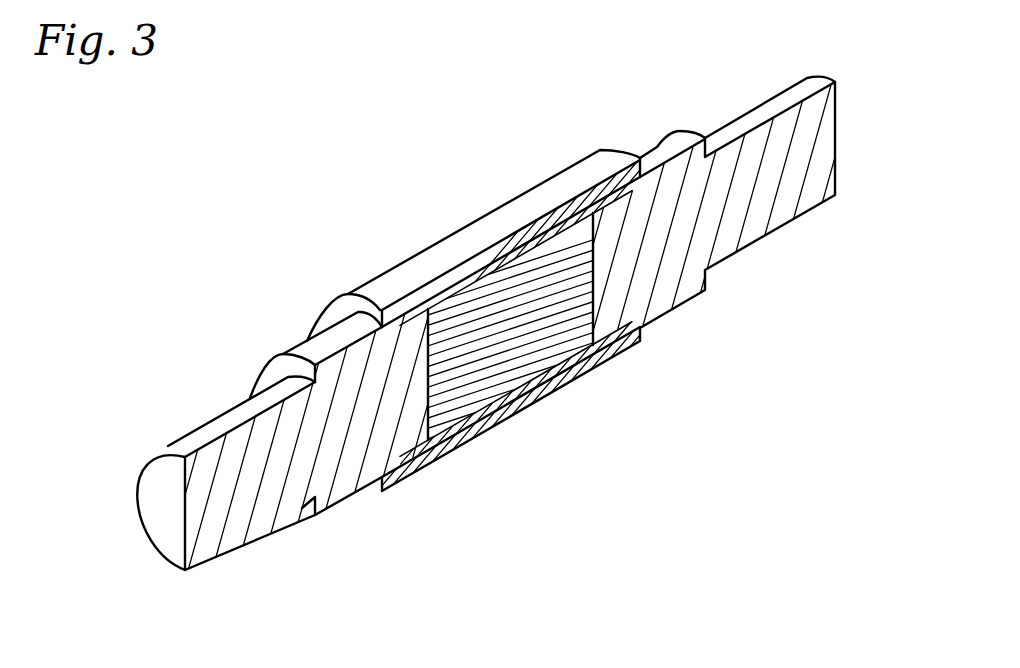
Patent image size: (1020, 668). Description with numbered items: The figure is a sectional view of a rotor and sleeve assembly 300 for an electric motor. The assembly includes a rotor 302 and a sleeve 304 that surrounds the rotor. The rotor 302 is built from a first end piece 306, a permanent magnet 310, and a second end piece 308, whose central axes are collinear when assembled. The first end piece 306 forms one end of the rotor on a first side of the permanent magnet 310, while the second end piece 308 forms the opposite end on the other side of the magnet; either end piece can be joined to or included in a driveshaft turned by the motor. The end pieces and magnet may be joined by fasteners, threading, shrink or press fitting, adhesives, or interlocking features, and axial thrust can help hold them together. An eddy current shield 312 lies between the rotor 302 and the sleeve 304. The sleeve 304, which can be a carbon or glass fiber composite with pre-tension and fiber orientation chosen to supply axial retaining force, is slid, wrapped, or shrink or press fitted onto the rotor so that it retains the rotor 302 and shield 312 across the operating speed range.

The rotor and sleeve assembly 300 is at (302, 186).
The rotor 302 is at (204, 391).
The sleeve 304 is at (541, 203).
The first end piece 306 is at (266, 502).
The second end piece 308 is at (783, 203).
The permanent magnet 310 is at (527, 360).
The eddy current shield 312 is at (484, 426).